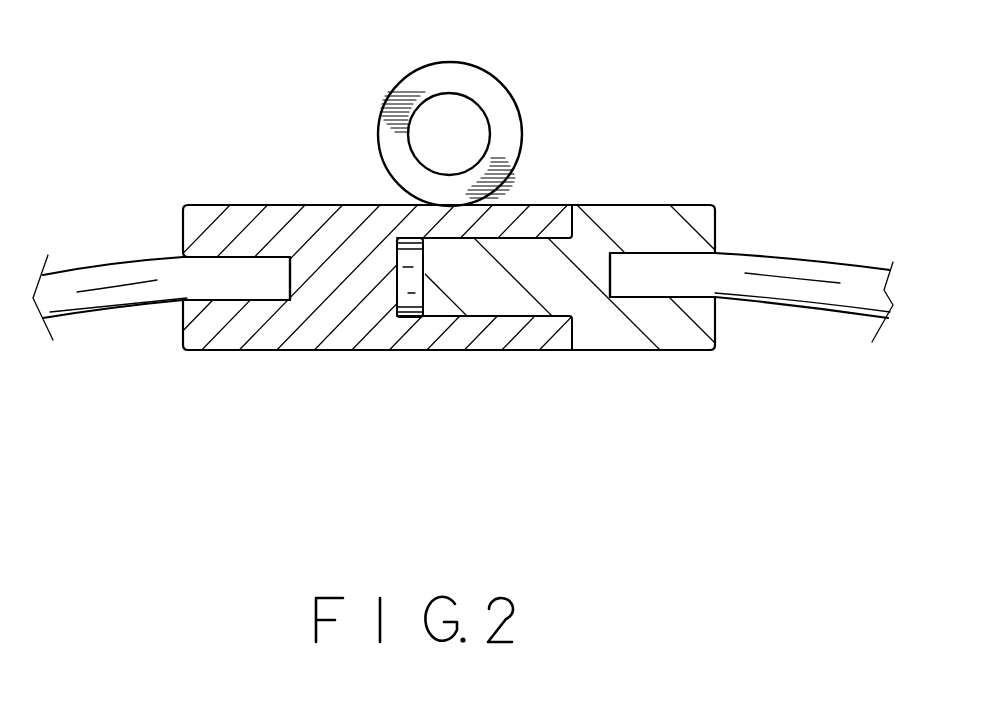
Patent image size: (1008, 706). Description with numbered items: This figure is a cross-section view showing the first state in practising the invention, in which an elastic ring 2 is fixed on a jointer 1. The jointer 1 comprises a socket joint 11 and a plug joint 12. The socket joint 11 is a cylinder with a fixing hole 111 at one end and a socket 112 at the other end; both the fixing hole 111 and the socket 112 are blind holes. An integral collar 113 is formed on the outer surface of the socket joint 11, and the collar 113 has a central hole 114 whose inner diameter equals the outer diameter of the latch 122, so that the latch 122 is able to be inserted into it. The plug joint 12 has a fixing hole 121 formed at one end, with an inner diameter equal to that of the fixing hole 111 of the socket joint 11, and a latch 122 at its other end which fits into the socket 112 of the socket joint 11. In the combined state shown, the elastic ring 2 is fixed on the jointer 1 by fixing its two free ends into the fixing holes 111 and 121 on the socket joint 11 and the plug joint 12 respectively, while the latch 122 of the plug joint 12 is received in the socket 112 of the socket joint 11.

The jointer 1 is at (288, 203).
The socket joint 11 is at (344, 330).
The fixing hole 111 is at (237, 300).
The socket 112 is at (408, 305).
The collar 113 is at (483, 77).
The central hole 114 is at (448, 130).
The plug joint 12 is at (585, 343).
The fixing hole 121 is at (660, 297).
The latch 122 is at (503, 302).
The elastic ring 2 is at (115, 300).